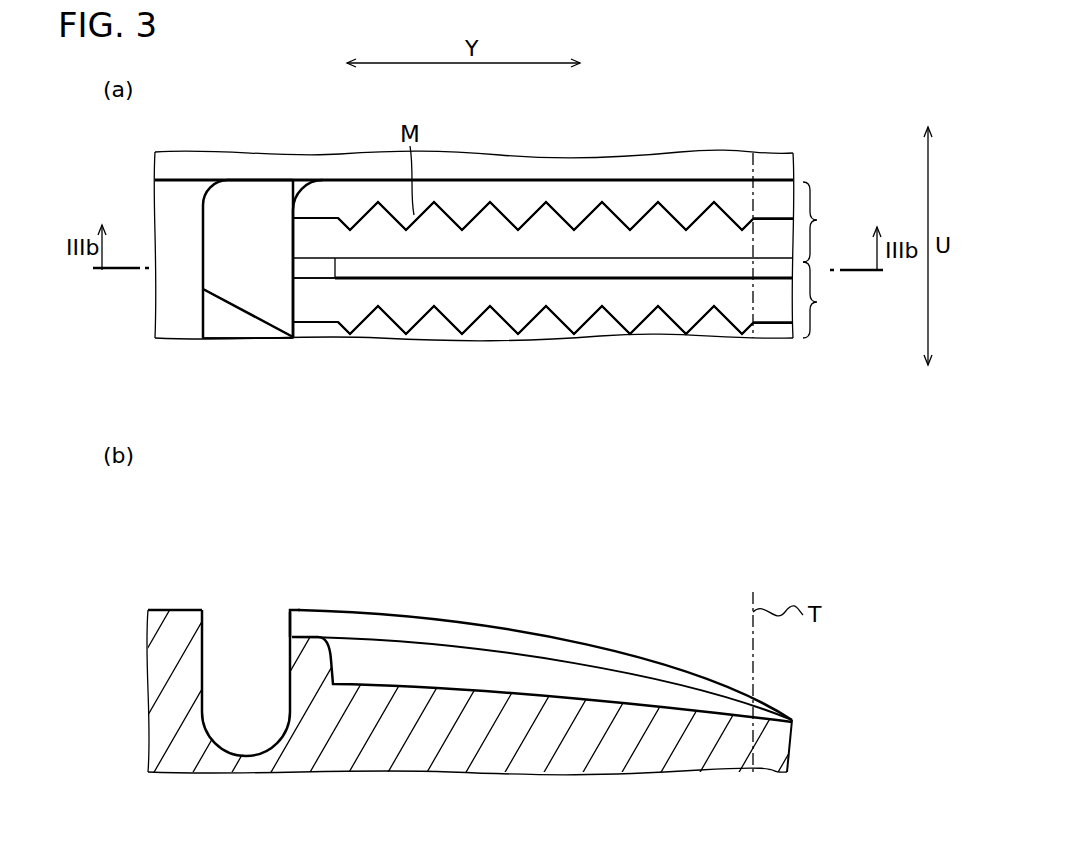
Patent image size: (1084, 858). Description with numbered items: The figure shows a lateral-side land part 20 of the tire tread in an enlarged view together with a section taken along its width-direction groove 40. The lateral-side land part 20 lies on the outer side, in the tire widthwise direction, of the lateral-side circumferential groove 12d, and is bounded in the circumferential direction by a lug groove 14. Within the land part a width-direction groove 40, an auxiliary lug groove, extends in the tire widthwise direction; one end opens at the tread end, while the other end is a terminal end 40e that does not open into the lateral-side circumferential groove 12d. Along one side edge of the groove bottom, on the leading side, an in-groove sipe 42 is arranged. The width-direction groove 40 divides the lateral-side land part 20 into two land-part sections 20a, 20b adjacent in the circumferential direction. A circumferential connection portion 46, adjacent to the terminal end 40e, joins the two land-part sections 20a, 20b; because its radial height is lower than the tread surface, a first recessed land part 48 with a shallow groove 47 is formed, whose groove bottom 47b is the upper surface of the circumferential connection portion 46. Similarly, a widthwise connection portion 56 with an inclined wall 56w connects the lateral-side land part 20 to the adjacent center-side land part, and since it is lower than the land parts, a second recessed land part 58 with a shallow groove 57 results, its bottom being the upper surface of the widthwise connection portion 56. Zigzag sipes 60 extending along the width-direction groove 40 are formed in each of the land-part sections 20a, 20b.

The lateral-side circumferential groove 12d is at (288, 233).
The lug groove 14 is at (477, 160).
The lateral-side land part 20 is at (795, 345).
The land-part section 20a is at (833, 222).
The land-part section 20b is at (833, 300).
The width-direction groove 40 is at (548, 267).
The terminal end 40e is at (328, 278).
The in-groove sipe 42 is at (623, 271).
The circumferential connection portion 46 is at (317, 265).
The shallow groove 47 is at (305, 604).
The groove bottom 47b is at (292, 614).
The first recessed land part 48 is at (305, 305).
The widthwise connection portion 56 is at (223, 323).
The inclined wall 56w is at (203, 289).
The shallow groove 57 is at (248, 344).
The second recessed land part 58 is at (245, 262).
The sipe 60 is at (677, 217).